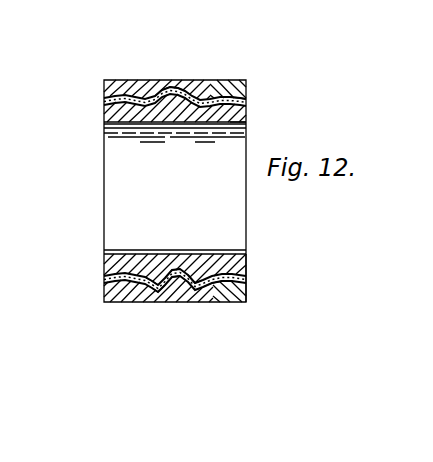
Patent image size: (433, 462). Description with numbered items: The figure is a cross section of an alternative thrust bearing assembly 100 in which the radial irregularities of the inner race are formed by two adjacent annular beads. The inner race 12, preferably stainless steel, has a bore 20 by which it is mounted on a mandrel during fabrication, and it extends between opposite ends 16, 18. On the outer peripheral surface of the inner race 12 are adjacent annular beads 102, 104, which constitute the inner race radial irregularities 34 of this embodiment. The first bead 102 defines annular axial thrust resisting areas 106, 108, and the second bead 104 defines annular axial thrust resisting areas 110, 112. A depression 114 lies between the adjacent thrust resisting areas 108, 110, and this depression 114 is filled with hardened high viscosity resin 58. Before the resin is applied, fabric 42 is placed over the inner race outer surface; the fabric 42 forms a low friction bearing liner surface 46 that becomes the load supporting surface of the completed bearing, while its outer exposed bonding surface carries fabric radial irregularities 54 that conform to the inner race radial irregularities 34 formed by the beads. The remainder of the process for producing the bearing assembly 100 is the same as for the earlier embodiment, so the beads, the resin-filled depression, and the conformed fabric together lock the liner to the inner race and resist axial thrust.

The bearing assembly 100 is at (96, 70).
The inner race 12 is at (104, 106).
The bore 20 is at (104, 134).
The inner race radial irregularities 34 is at (172, 97).
The high viscosity resin 58 is at (183, 92).
The fabric 42 is at (246, 106).
The bearing liner surface 46 is at (252, 121).
The inner race end 16 is at (104, 258).
The inner race end 18 is at (247, 262).
The annular axial thrust resisting area 106 is at (104, 303).
The fabric radial irregularities 54 is at (167, 293).
The annular bead 102 is at (153, 272).
The depression 114 is at (170, 270).
The annular bead 104 is at (200, 270).
The annular axial thrust resisting area 108 is at (160, 290).
The annular axial thrust resisting area 110 is at (177, 292).
The annular axial thrust resisting area 112 is at (212, 297).